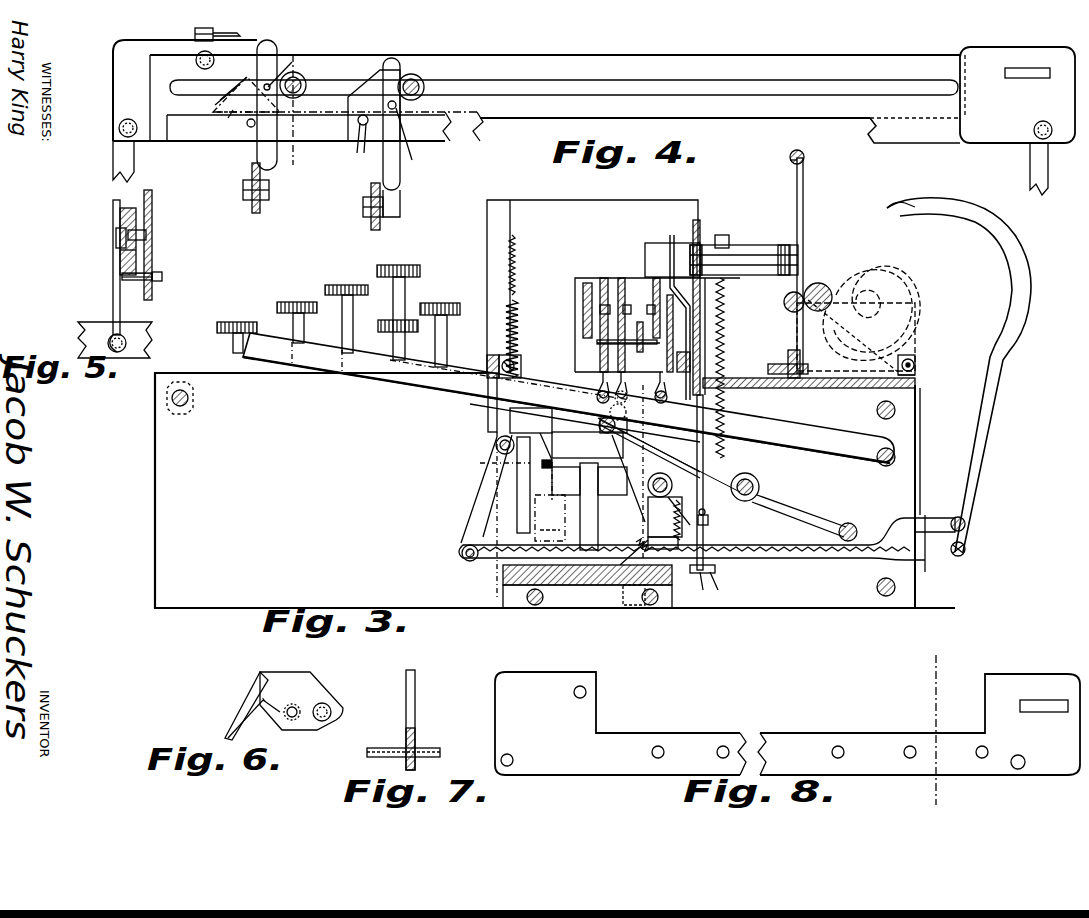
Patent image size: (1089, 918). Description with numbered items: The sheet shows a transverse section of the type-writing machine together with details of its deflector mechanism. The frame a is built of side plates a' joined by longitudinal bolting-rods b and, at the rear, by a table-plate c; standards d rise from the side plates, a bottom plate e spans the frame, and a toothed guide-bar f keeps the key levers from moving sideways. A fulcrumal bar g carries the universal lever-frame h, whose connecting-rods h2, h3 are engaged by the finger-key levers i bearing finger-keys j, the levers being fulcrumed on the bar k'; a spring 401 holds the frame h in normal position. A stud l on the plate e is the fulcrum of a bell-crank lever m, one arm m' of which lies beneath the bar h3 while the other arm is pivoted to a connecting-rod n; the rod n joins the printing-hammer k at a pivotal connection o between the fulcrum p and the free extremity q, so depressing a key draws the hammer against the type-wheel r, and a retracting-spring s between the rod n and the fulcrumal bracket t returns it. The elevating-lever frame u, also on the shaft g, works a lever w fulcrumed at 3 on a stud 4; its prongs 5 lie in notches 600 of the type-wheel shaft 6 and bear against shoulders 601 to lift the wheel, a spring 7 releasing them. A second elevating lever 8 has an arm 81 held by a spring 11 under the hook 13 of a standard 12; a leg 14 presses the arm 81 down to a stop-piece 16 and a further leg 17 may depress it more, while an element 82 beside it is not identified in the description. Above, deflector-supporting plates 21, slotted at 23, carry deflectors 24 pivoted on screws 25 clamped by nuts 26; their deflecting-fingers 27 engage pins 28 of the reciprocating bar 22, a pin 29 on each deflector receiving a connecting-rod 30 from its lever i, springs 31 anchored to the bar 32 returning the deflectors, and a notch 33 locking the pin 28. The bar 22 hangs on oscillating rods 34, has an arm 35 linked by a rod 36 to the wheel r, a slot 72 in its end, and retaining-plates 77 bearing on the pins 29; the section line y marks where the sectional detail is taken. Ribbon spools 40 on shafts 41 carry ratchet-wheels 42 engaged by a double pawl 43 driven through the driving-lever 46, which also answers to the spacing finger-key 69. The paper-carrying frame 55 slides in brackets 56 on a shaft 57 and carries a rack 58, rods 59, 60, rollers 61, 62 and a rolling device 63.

In FIG. 4, the deflector-supporting plates 21 is at (536, 90).
In FIG. 5, the deflector-supporting plates 21 is at (120, 214).
In FIG. 3, the deflector-supporting plates 21 is at (603, 278).
In FIG. 4, the reciprocating bar 22 is at (563, 127).
In FIG. 5, the reciprocating bar 22 is at (153, 267).
In FIG. 3, the reciprocating bar 22 is at (637, 330).
In FIG. 7, the reciprocating bar 22 is at (415, 740).
In FIG. 8, the reciprocating bar 22 is at (787, 723).
In FIG. 4, the slot 23 is at (564, 90).
In FIG. 3, the slot 23 is at (600, 306).
In FIG. 4, the deflectors 24 is at (306, 101).
In FIG. 5, the deflectors 24 is at (124, 256).
In FIG. 3, the deflectors 24 is at (600, 342).
In FIG. 6, the deflectors 24 is at (301, 701).
In FIG. 4, the pivotal screw 25 is at (306, 82).
In FIG. 5, the pivotal screw 25 is at (116, 238).
In FIG. 5, the nut 26 is at (140, 232).
In FIG. 4, the deflecting-fingers 27 is at (218, 100).
In FIG. 6, the deflecting-fingers 27 is at (232, 710).
In FIG. 4, the pins 28 is at (249, 128).
In FIG. 5, the pins 28 is at (163, 278).
In FIG. 3, the pins 28 is at (623, 389).
In FIG. 7, the pins 28 is at (378, 748).
In FIG. 4, the pin 29 is at (348, 106).
In FIG. 6, the pin 29 is at (322, 718).
In FIG. 4, the connecting-rod 30 is at (322, 135).
In FIG. 5, the connecting-rod 30 is at (113, 305).
In FIG. 3, the connecting-rod 30 is at (600, 383).
In FIG. 3, the spring 31 is at (518, 322).
In FIG. 3, the spring-supporting bar 32 is at (516, 260).
In FIG. 4, the notch 33 is at (218, 125).
In FIG. 6, the notch 33 is at (254, 718).
In FIG. 4, the oscillating rods 34 is at (1036, 172).
In FIG. 4, the arm 35 is at (205, 30).
In FIG. 4, the rod 36 is at (238, 34).
In FIG. 3, the ribbon spool 40 is at (660, 243).
In FIG. 3, the spool-shafts 41 is at (729, 238).
In FIG. 3, the ratchet-wheels 42 is at (768, 366).
In FIG. 3, the double pawl 43 is at (684, 370).
In FIG. 3, the driving-lever 46 is at (674, 394).
In FIG. 3, the sliding paper-carrying frame 55 is at (856, 299).
In FIG. 3, the brackets 56 is at (918, 376).
In FIG. 3, the shaft 57 is at (916, 362).
In FIG. 3, the rack 58 is at (788, 358).
In FIG. 3, the rod 59 is at (805, 160).
In FIG. 3, the rod 60 is at (779, 170).
In FIG. 3, the roller 61 is at (782, 302).
In FIG. 3, the roller 62 is at (820, 284).
In FIG. 3, the rolling device 63 is at (916, 290).
In FIG. 3, the finger-key 69 is at (440, 326).
In FIG. 4, the slot 72 is at (1030, 74).
In FIG. 8, the slot 72 is at (1044, 710).
In FIG. 3, the retaining-plates 77 is at (600, 314).
In FIG. 3, the arm 81 is at (612, 481).
In FIG. 3, the bar 82 is at (721, 587).
In FIG. 3, the spring 401 is at (734, 368).
In FIG. 3, the peripheral grooves 600 is at (710, 525).
In FIG. 3, the shoulders 601 is at (726, 514).
In FIG. 3, the fulcrum 3 is at (628, 472).
In FIG. 8, the fulcrum 3 is at (932, 726).
In FIG. 3, the stud 4 is at (651, 532).
In FIG. 3, the prongs 5 is at (704, 510).
In FIG. 3, the type-wheel shaft 6 is at (708, 392).
In FIG. 3, the spring 7 is at (680, 515).
In FIG. 3, the type-wheel-elevating lever 8 is at (629, 534).
In FIG. 3, the spring 11 is at (550, 518).
In FIG. 3, the standard 12 is at (590, 506).
In FIG. 3, the hook 13 is at (562, 480).
In FIG. 3, the leg 14 is at (510, 420).
In FIG. 3, the stop-piece 16 is at (550, 527).
In FIG. 3, the leg 17 is at (540, 446).
In FIG. 3, the frame a is at (555, 490).
In FIG. 3, the side plates a' is at (326, 525).
In FIG. 3, the longitudinal bolting-rods b is at (181, 408).
In FIG. 3, the table-plate c is at (809, 393).
In FIG. 3, the standards d is at (592, 400).
In FIG. 3, the bottom plate e is at (587, 586).
In FIG. 3, the toothed guide-bar f is at (487, 358).
In FIG. 3, the fulcrumal bar g is at (760, 485).
In FIG. 3, the universal lever-frame h is at (813, 512).
In FIG. 3, the longitudinal connecting-rod h2 is at (854, 521).
In FIG. 3, the front connecting-rod h3 is at (599, 418).
In FIG. 5, the finger-key levers i is at (115, 340).
In FIG. 3, the finger-key levers i is at (568, 398).
In FIG. 3, the finger-keys j is at (318, 299).
In FIG. 3, the printing-hammer k is at (959, 375).
In FIG. 3, the fulcrumal bar k' is at (887, 468).
In FIG. 3, the stud l is at (505, 484).
In FIG. 3, the bell-crank lever m is at (474, 489).
In FIG. 3, the arm m' is at (587, 445).
In FIG. 3, the connecting-rod n is at (480, 555).
In FIG. 3, the pivotal connection o is at (966, 525).
In FIG. 3, the fulcrum p is at (964, 552).
In FIG. 3, the free extremity q is at (890, 208).
In FIG. 3, the type-wheel r is at (770, 248).
In FIG. 3, the retracting-spring s is at (772, 552).
In FIG. 3, the fulcrumal bracket t is at (929, 552).
In FIG. 3, the type-wheel-elevating-lever frame u is at (680, 460).
In FIG. 3, the lever w is at (648, 490).
In FIG. 4, the section line y is at (289, 91).